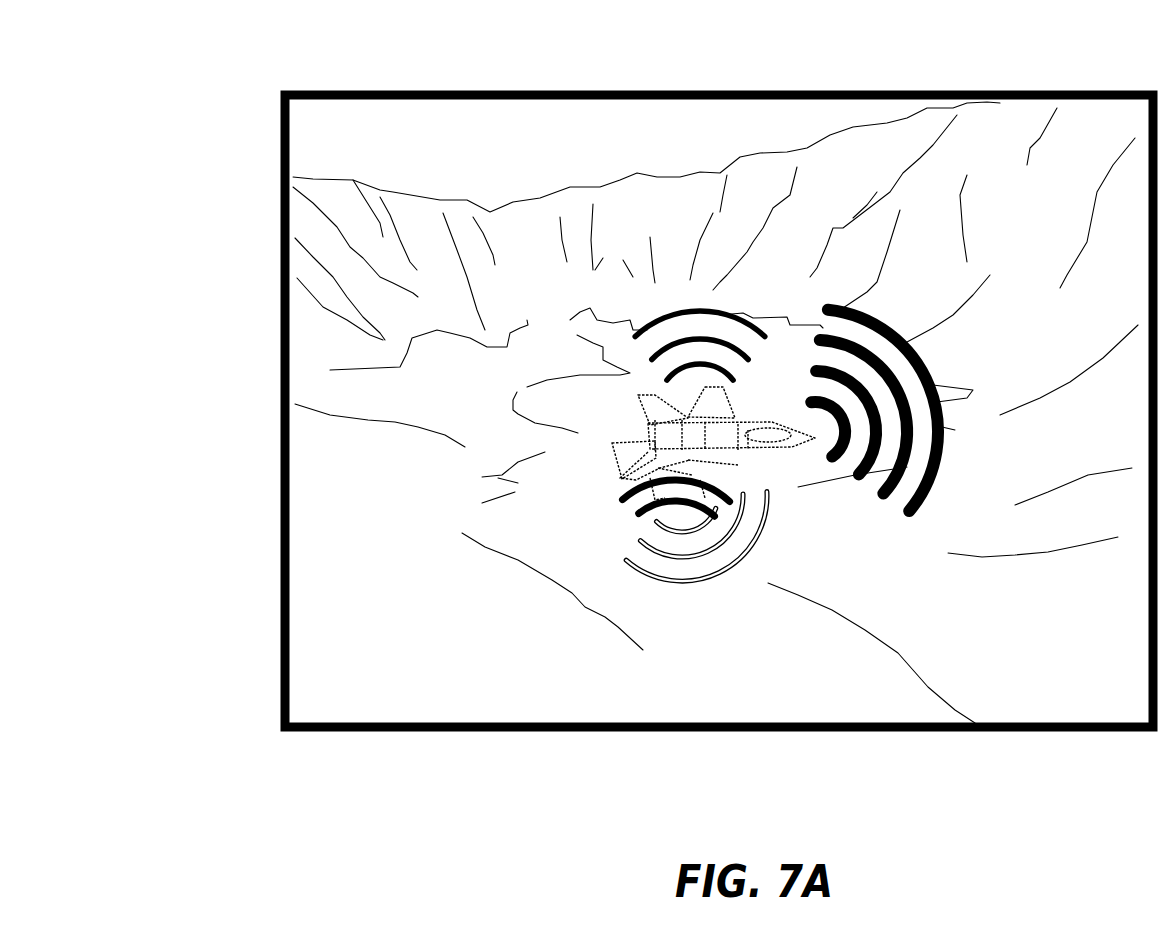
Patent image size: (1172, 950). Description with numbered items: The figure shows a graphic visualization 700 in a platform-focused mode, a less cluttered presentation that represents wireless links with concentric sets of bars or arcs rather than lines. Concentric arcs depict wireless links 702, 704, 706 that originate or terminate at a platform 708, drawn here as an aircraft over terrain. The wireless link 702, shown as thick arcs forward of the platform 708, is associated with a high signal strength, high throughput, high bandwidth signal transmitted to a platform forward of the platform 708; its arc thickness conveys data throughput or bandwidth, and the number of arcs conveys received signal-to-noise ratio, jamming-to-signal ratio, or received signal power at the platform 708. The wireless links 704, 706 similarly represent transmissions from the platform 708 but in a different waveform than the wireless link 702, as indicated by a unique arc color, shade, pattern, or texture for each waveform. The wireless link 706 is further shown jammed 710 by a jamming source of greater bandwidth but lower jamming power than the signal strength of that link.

The graphic visualization 700 is at (142, 98).
The wireless link 702 is at (893, 307).
The wireless link 704 is at (682, 308).
The wireless link 706 is at (603, 582).
The platform 708 is at (648, 423).
The jamming 710 is at (717, 505).